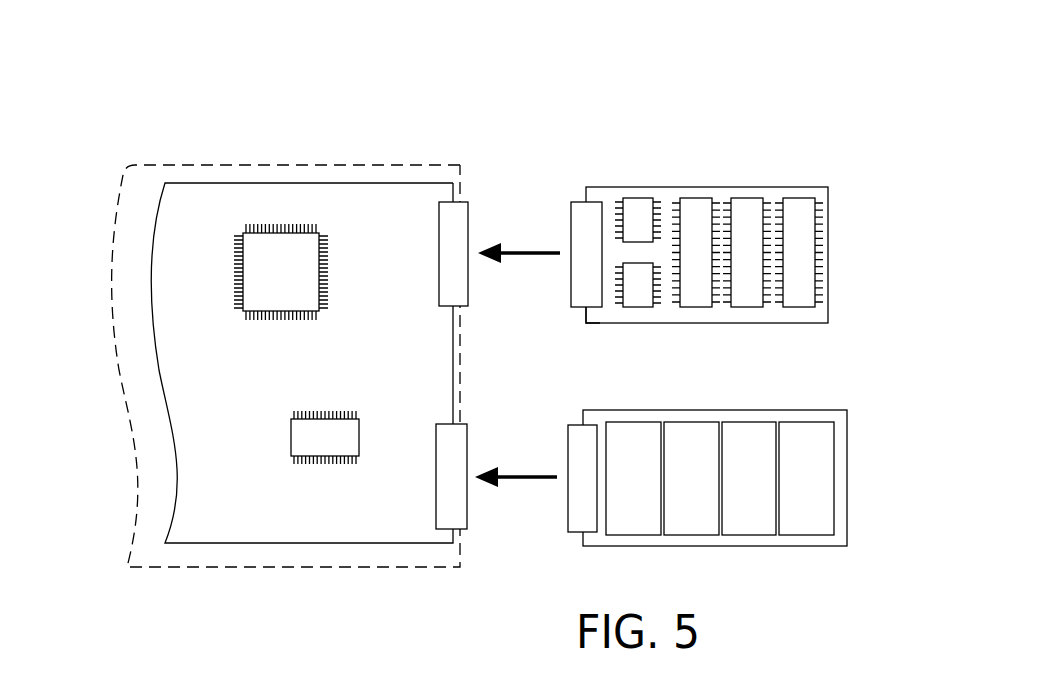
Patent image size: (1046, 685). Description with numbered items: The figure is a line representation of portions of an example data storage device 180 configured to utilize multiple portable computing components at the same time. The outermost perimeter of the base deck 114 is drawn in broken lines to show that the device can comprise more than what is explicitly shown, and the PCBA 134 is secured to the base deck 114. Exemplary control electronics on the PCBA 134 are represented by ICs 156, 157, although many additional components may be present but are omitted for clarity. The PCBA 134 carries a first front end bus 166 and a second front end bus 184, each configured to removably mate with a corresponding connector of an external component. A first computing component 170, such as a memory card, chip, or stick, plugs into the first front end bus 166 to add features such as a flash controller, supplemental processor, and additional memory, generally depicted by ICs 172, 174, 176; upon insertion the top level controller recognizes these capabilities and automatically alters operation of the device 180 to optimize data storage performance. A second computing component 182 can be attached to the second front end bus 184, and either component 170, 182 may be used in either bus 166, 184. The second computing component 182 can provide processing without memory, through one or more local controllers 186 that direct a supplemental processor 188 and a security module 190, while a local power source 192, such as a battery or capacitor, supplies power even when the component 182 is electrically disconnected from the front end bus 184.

The data storage device 180 is at (124, 44).
The base deck 114 is at (155, 164).
The PCBA 134 is at (220, 534).
The IC 157 is at (288, 253).
The IC 156 is at (305, 436).
The front end bus 166 is at (439, 277).
The second front end bus 184 is at (437, 469).
The computing component 170 is at (582, 321).
The IC 172 is at (637, 207).
The IC 174 is at (764, 185).
The IC 176 is at (640, 300).
The second computing component 182 is at (857, 404).
The local controller 186 is at (653, 489).
The supplemental processor 188 is at (711, 489).
The security module 190 is at (768, 489).
The local power source 192 is at (826, 489).